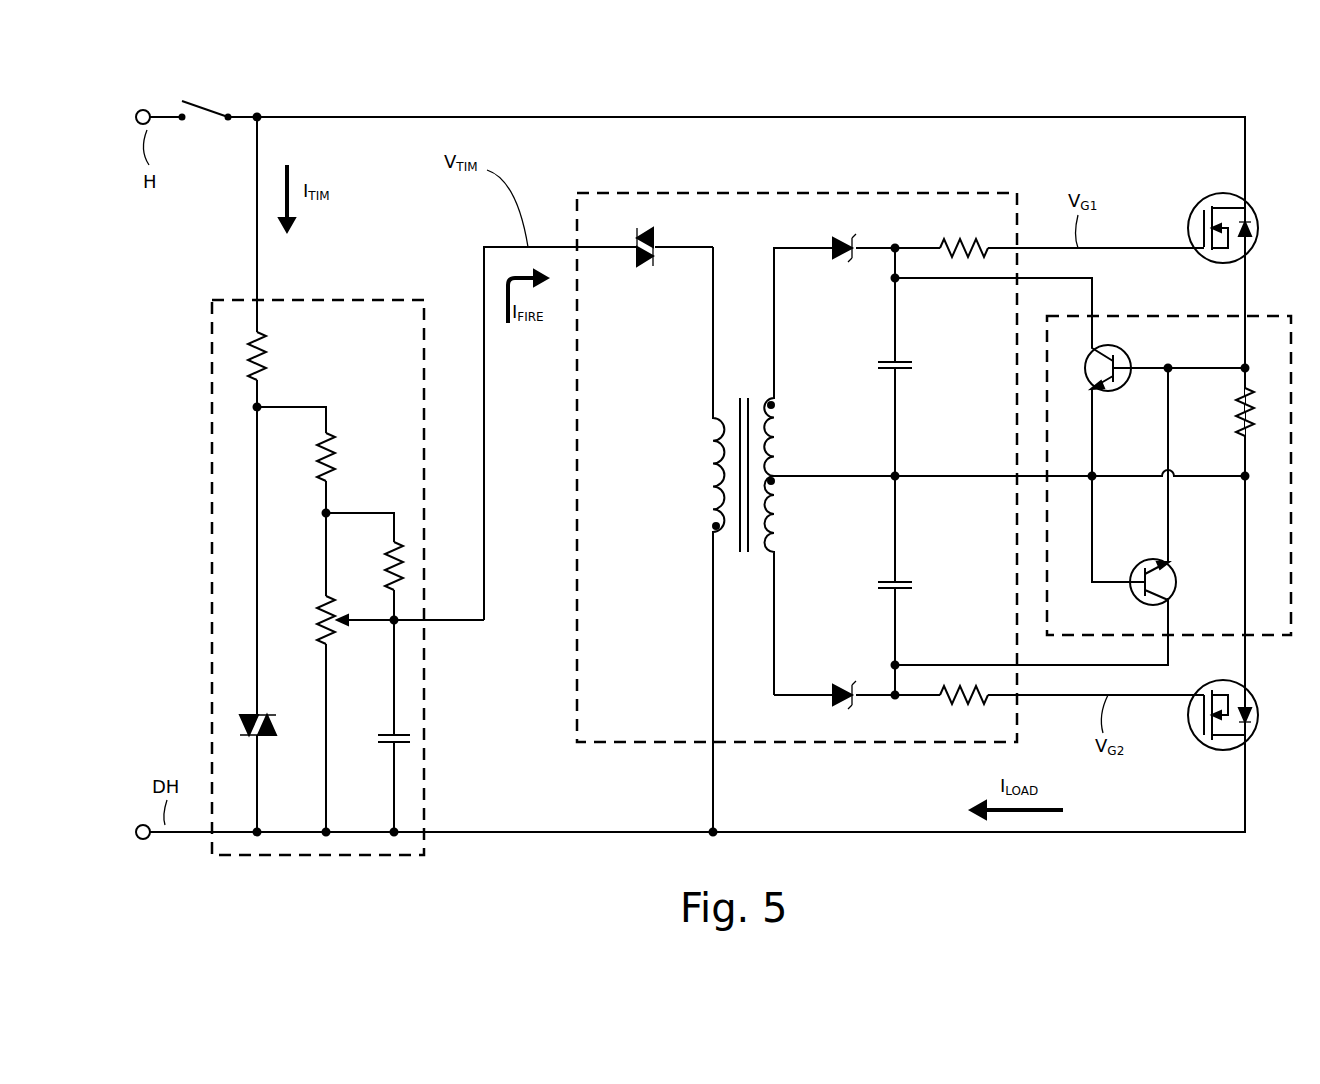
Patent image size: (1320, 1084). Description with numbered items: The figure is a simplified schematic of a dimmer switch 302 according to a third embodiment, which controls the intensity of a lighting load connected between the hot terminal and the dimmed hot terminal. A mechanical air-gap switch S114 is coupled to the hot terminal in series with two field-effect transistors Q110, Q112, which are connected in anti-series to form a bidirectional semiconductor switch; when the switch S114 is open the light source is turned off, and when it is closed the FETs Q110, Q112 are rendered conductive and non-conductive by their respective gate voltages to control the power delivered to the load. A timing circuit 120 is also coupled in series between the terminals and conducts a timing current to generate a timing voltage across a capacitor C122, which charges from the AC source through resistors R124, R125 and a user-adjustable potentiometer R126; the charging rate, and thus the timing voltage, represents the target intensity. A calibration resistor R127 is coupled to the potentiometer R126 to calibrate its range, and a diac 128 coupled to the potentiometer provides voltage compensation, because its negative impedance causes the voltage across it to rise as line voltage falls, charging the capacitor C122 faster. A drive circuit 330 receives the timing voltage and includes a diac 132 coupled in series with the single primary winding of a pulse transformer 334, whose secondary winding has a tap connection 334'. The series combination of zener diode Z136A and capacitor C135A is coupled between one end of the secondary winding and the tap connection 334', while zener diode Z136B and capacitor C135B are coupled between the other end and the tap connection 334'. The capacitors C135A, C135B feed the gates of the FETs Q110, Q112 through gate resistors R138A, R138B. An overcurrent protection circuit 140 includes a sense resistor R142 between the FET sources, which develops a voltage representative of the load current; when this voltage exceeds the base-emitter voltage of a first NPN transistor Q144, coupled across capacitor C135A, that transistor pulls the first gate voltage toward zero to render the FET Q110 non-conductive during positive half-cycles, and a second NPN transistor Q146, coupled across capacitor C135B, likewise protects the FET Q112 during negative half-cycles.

The dimmer switch 302 is at (1003, 858).
The mechanical air-gap switch S114 is at (200, 115).
The timing circuit 120 is at (371, 300).
The resistor R124 is at (266, 352).
The resistor R125 is at (337, 460).
The potentiometer R126 is at (317, 608).
The calibration resistor R127 is at (385, 577).
The diac 128 is at (273, 728).
The capacitor C122 is at (380, 736).
The drive circuit 330 is at (665, 742).
The diac 132 is at (642, 265).
The pulse transformer 334 is at (689, 541).
The tap connection 334' is at (829, 471).
The zener diode Z136A is at (852, 262).
The zener diode Z136B is at (852, 689).
The gate resistor R138A is at (975, 242).
The gate resistor R138B is at (968, 700).
The capacitor C135A is at (905, 374).
The capacitor C135B is at (905, 575).
The field-effect transistor Q110 is at (1205, 203).
The field-effect transistor Q112 is at (1218, 750).
The overcurrent protection circuit 140 is at (1213, 315).
The first NPN bipolar junction transistor Q144 is at (1128, 383).
The second NPN bipolar junction transistor Q146 is at (1178, 590).
The sense resistor R142 is at (1235, 420).